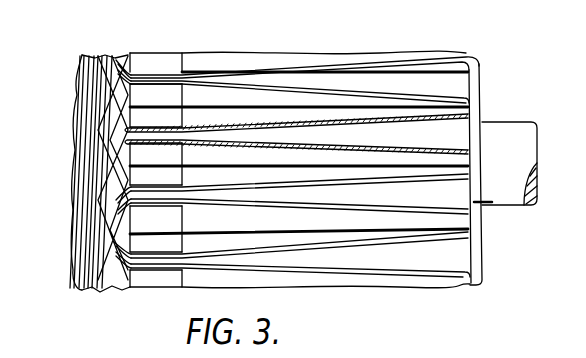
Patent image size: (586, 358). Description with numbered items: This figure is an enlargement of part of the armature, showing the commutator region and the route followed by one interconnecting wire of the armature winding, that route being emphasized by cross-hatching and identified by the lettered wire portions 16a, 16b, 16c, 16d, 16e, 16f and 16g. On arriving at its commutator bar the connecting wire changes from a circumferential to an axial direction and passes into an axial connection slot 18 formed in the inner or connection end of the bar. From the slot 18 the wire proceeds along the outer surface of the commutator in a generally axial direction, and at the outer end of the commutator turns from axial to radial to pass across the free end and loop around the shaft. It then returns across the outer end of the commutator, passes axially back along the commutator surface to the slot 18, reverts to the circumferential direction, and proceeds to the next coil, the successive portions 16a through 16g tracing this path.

The axial connection slot 18 is at (150, 172).
The connecting wire route portion 16a is at (113, 283).
The connecting wire route portion 16b is at (183, 142).
The connecting wire route portion 16c is at (242, 146).
The connecting wire route portion 16d is at (470, 197).
The connecting wire route portion 16e is at (404, 117).
The connecting wire route portion 16f is at (138, 128).
The connecting wire route portion 16g is at (118, 63).